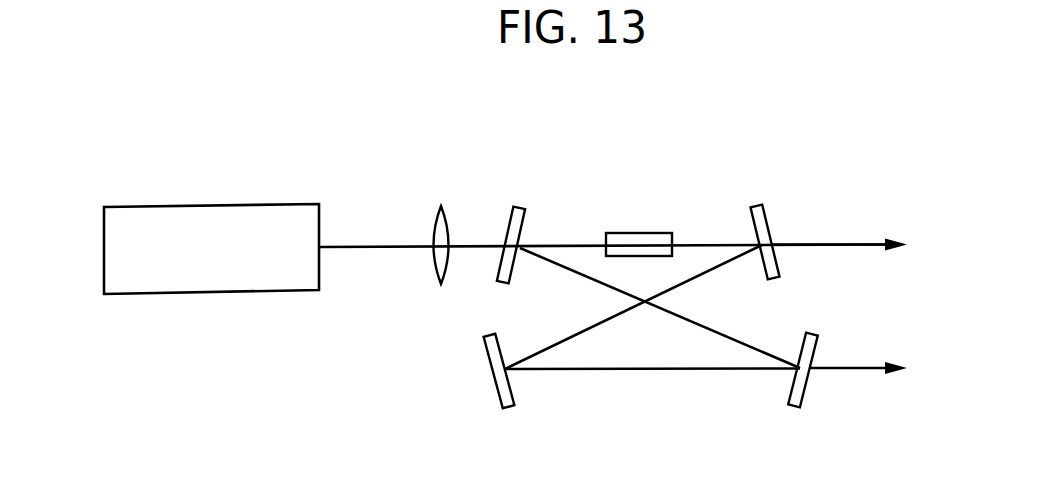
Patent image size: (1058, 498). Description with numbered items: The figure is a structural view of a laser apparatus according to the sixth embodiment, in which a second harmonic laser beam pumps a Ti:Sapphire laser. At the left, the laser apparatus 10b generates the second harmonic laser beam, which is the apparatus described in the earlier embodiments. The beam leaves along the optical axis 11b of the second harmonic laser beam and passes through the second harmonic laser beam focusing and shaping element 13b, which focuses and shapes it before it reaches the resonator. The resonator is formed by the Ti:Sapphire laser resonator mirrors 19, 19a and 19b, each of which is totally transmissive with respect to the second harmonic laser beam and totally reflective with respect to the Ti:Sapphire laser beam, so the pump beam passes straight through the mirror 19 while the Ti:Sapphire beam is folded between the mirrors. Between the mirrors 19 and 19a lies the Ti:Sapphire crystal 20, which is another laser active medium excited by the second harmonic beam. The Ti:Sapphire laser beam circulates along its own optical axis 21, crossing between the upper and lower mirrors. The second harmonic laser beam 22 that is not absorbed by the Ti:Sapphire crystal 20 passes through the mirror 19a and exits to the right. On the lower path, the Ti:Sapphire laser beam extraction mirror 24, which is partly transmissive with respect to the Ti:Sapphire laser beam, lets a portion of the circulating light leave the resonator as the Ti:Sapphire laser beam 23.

The laser apparatus 10b is at (212, 205).
The optical axis of the second harmonic laser beam 11b is at (363, 248).
The second harmonic laser beam focusing and shaping element 13b is at (437, 218).
The Ti:Sapphire laser resonator mirror 19 is at (513, 205).
The Ti:Sapphire laser resonator mirror 19a is at (753, 207).
The Ti:Sapphire laser resonator mirror 19b is at (490, 368).
The Ti:Sapphire crystal 20 is at (638, 232).
The optical axis of the Ti:Sapphire laser beam 21 is at (650, 370).
The second harmonic laser beam 22 is at (825, 242).
The Ti:Sapphire laser beam 23 is at (853, 372).
The Ti:Sapphire laser beam extraction mirror 24 is at (815, 333).